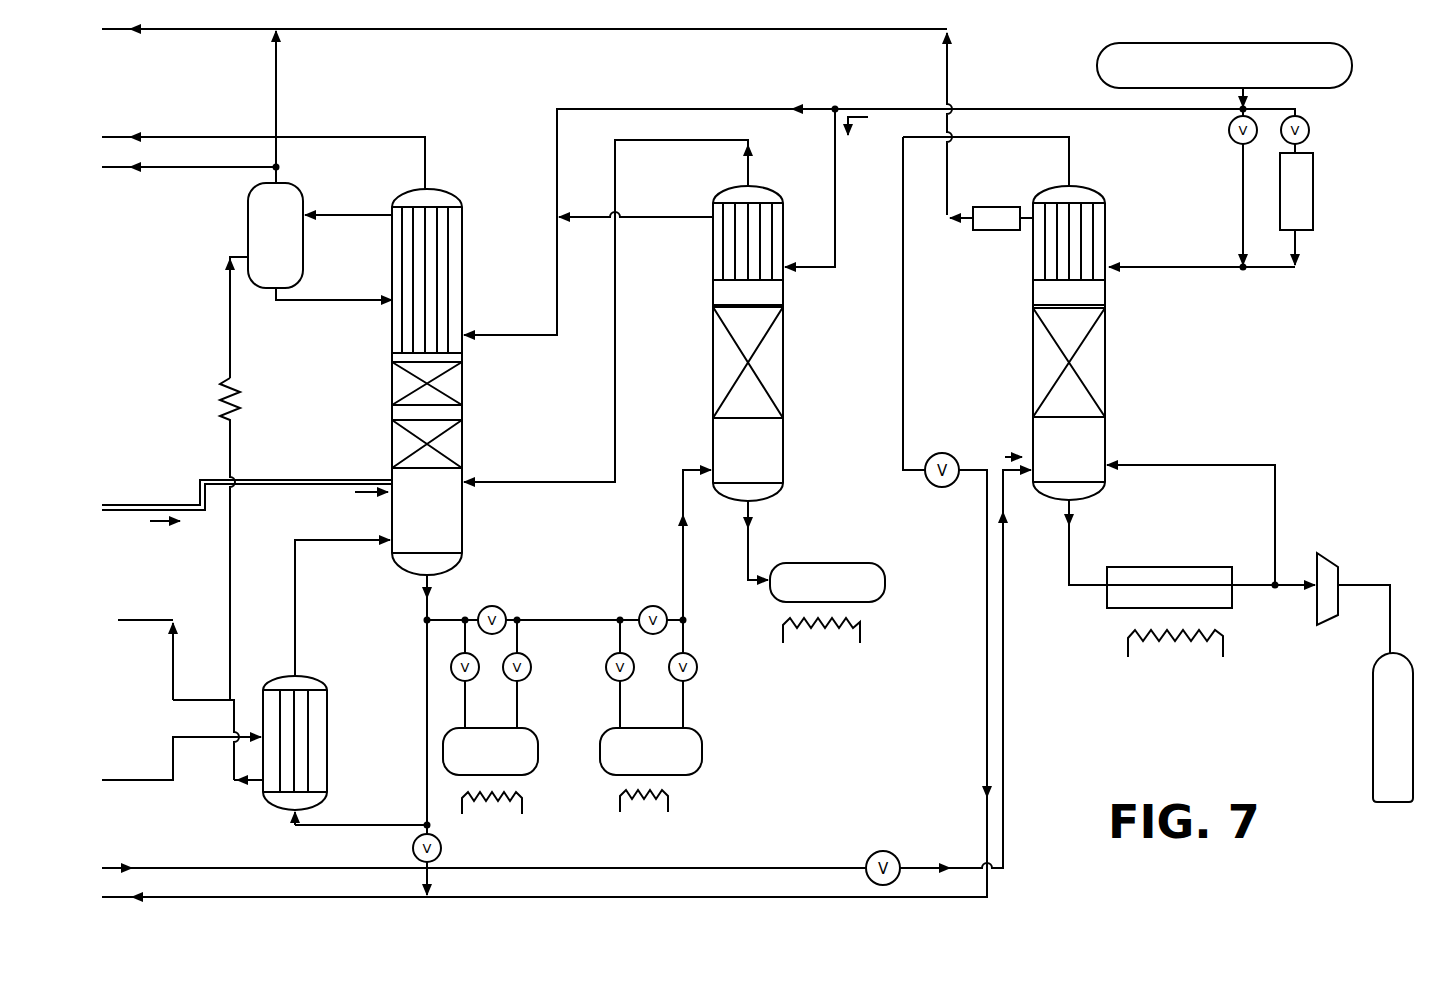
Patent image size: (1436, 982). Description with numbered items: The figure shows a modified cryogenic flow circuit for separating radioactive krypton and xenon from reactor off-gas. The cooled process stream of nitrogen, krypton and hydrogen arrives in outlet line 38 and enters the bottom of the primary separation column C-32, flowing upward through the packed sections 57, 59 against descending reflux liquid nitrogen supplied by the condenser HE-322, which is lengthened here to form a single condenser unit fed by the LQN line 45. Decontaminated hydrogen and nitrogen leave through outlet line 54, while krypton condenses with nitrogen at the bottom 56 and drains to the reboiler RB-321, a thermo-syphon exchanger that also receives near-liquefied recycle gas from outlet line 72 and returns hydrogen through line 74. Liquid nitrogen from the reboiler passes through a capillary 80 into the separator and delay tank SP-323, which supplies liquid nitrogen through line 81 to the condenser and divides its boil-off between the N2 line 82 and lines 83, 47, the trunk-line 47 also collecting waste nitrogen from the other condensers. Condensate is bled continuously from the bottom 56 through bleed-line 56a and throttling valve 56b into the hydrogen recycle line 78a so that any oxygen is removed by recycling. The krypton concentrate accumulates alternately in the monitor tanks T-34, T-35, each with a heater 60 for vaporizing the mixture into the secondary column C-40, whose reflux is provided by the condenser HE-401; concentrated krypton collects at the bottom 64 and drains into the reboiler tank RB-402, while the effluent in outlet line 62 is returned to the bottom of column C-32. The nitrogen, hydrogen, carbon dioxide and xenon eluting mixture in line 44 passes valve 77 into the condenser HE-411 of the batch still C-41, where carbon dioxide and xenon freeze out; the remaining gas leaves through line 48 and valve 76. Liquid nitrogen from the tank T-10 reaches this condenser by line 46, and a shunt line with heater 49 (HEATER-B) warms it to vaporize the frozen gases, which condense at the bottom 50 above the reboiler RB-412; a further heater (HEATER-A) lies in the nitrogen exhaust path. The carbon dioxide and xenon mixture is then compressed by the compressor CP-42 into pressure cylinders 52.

The outlet line 38 is at (312, 488).
The outlet line 44 is at (337, 868).
The LQN line 45 is at (727, 109).
The line 46 is at (1243, 155).
The trunk-line 47 is at (320, 30).
The line 48 is at (905, 340).
The heater 49 is at (1312, 216).
The bottom of column C-41 50 is at (1093, 490).
The pressure cylinders 52 is at (1373, 737).
The outlet line 54 is at (393, 133).
The bottom of column C-32 56 is at (447, 566).
The bleed-line 56a is at (433, 878).
The throttling valve 56b is at (442, 848).
The packed section 57 is at (392, 446).
The packed section 59 is at (392, 390).
The heater 60 is at (482, 803).
The outlet line 62 is at (752, 173).
The bottom of column C-40 64 is at (766, 500).
The outlet line 72 is at (158, 783).
The line 74 is at (173, 656).
The valve 76 is at (965, 437).
The valve 77 is at (895, 856).
The hydrogen recycle line 78a is at (316, 897).
The capillary 80 is at (238, 394).
The line 81 is at (372, 297).
The N2 line 82 is at (250, 170).
The line 83 is at (276, 78).
The nitrogen separator and delay tank SP-323 is at (320, 235).
The condenser HE-322 is at (465, 250).
The primary separation column C-32 is at (464, 385).
The reboiler RB-321 is at (298, 731).
The monitor tank T-34 is at (490, 697).
The monitor tank T-35 is at (651, 697).
The condenser HE-401 is at (713, 252).
The secondary separation column C-40 is at (786, 397).
The reboiler tank RB-402 is at (827, 582).
The condenser HE-411 is at (1098, 220).
The batch still C-41 is at (1108, 380).
The reboiler RB-412 is at (1130, 565).
The compressor CP-42 is at (1326, 552).
The LQN tank T-10 is at (1224, 98).
The heater HEATER-A is at (991, 207).
The heater HEATER-B is at (1327, 191).